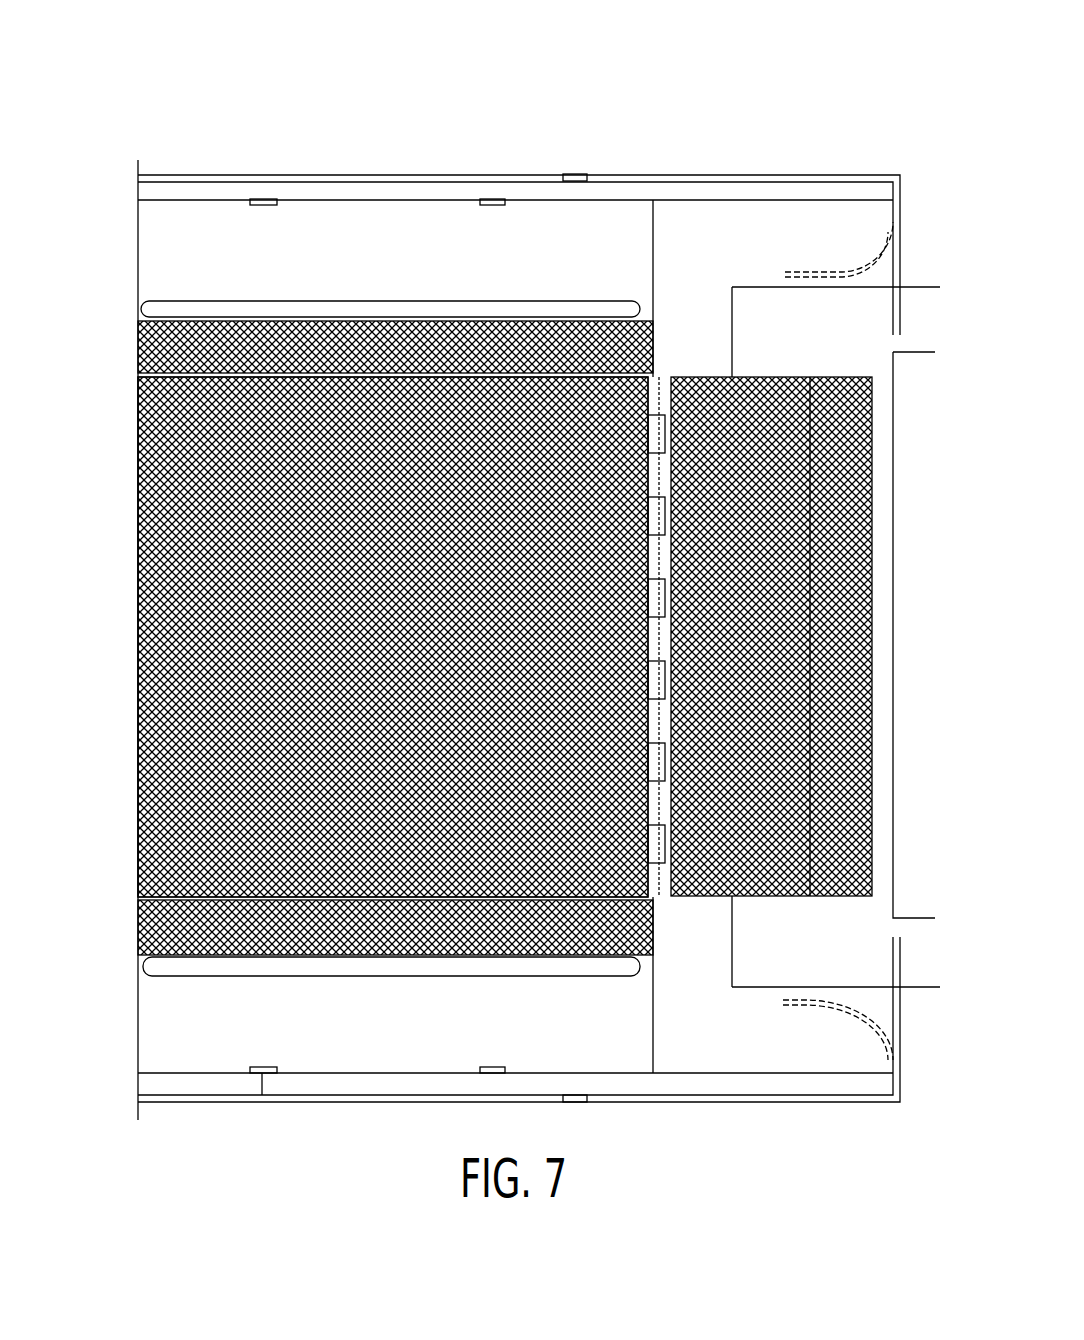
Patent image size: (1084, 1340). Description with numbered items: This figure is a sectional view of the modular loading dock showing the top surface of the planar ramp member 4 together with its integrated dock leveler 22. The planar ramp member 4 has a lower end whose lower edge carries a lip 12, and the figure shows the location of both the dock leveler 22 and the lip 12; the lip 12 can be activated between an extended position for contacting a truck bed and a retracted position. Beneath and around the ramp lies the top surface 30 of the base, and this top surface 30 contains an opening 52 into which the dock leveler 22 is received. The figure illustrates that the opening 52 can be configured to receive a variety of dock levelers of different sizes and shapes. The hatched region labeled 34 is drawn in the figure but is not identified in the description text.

The top surface 30 is at (188, 233).
The opening 52 is at (240, 325).
The hatched band 34 is at (328, 358).
The dock leveler 22 is at (440, 378).
The planar ramp member 4 is at (505, 400).
The lip 12 is at (768, 378).